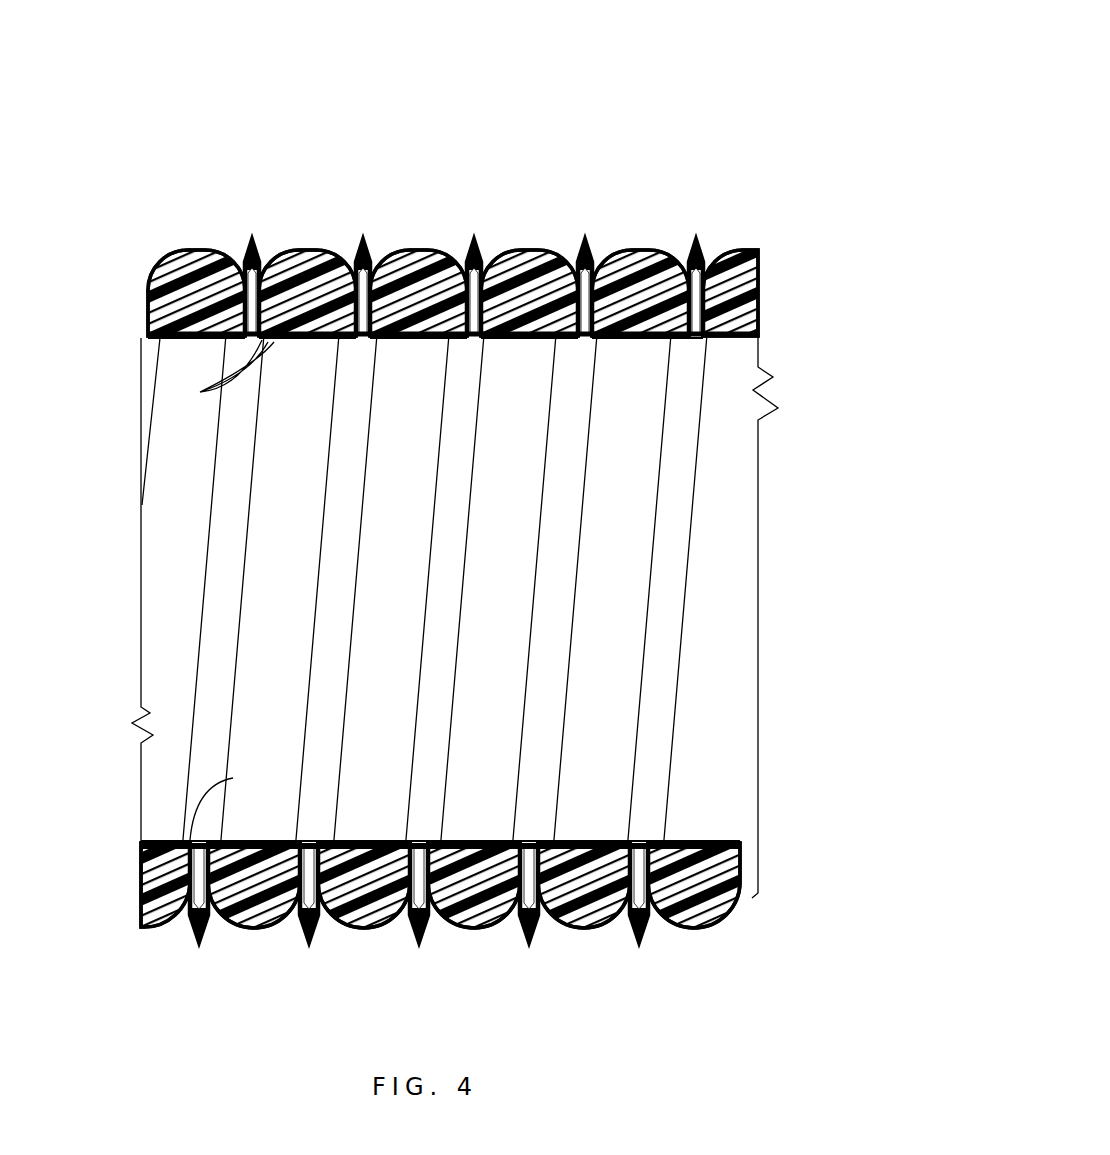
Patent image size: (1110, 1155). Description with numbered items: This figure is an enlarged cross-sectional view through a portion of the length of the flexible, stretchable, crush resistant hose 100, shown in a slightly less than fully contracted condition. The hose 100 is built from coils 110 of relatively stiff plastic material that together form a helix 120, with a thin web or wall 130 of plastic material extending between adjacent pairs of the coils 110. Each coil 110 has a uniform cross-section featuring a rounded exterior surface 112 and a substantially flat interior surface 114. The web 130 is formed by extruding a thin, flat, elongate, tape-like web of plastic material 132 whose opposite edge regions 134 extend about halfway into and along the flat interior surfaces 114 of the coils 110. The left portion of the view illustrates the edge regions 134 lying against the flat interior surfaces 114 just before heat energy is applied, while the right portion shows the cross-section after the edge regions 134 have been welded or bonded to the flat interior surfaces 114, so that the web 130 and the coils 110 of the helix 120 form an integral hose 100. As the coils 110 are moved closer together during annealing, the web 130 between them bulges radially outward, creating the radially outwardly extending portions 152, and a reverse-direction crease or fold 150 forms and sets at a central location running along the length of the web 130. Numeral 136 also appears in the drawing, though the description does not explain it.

The hose 100 is at (448, 528).
The coils 110 is at (202, 238).
The rounded exterior surface 112 is at (240, 256).
The flat interior surface 114 is at (402, 262).
The helix 120 is at (776, 256).
The web 130 is at (259, 262).
The web of plastic material 132 is at (210, 590).
The edge regions 134 is at (292, 342).
The connecting web 136 is at (548, 342).
The reverse-direction crease 150 is at (253, 236).
The radially outwardly extending portions 152 is at (146, 316).